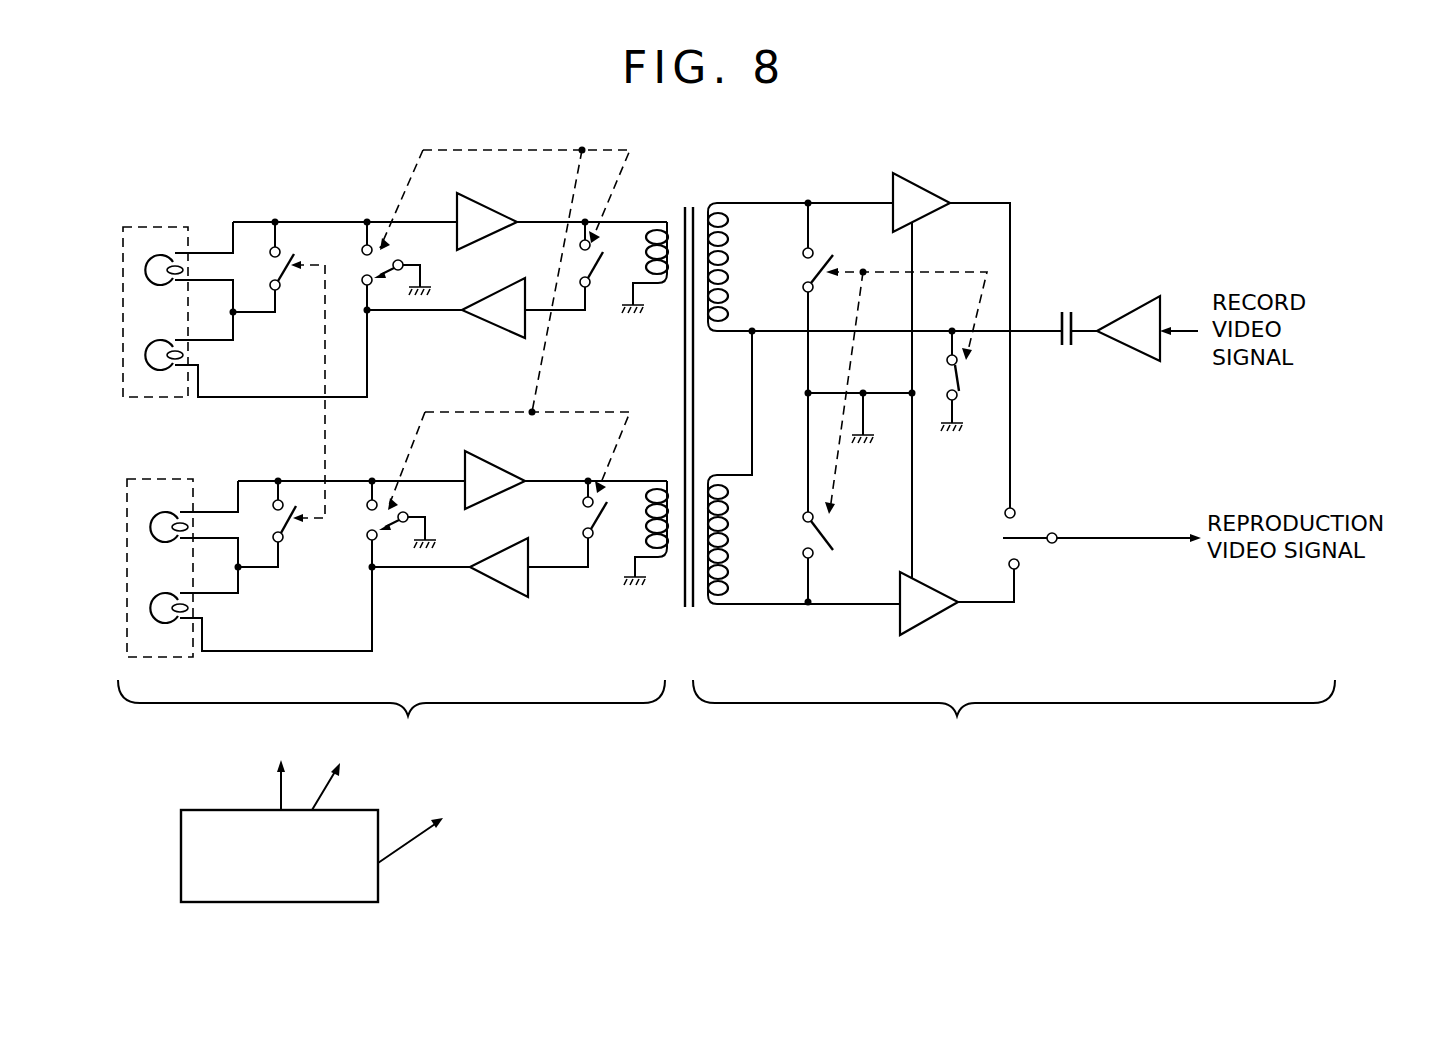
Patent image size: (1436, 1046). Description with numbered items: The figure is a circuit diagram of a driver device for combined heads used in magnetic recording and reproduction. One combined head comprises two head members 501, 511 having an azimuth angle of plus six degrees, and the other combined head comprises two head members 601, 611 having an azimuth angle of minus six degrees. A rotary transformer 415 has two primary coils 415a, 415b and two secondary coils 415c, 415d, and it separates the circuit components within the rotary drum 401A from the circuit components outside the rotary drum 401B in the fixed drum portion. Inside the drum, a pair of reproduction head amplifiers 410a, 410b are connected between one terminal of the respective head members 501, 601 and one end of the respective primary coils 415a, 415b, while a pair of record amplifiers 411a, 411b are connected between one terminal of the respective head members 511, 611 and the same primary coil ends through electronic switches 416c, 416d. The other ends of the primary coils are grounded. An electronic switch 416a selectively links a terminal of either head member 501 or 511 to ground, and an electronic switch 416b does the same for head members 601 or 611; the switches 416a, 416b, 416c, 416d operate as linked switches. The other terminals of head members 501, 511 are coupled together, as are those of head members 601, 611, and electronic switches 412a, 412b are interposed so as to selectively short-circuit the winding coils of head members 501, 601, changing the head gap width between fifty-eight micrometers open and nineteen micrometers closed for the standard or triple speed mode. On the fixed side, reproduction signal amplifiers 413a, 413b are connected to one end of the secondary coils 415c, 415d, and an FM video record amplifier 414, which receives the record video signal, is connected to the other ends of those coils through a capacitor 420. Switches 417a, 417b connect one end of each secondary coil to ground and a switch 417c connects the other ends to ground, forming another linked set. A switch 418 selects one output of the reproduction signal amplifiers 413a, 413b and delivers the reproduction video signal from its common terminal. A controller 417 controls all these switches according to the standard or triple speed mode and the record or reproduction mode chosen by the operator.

The head member 501 is at (147, 270).
The head member 511 is at (147, 355).
The head member 601 is at (152, 527).
The head member 611 is at (152, 608).
The electronic switch 412a is at (289, 280).
The electronic switch 412b is at (292, 518).
The electronic switch 416a is at (384, 258).
The electronic switch 416b is at (387, 516).
The electronic switch 416c is at (593, 285).
The electronic switch 416d is at (583, 509).
The reproduction head amplifier 410a is at (478, 218).
The reproduction head amplifier 410b is at (490, 477).
The record amplifier 411a is at (490, 314).
The record amplifier 411b is at (512, 576).
The rotary transformer 415 is at (690, 218).
The primary coil 415a is at (655, 222).
The primary coil 415b is at (655, 481).
The secondary coil 415c is at (728, 230).
The secondary coil 415d is at (722, 606).
The reproduction signal amplifier 413a is at (917, 202).
The reproduction signal amplifier 413b is at (928, 610).
The switch 417a is at (822, 258).
The switch 417b is at (828, 546).
The switch 417c is at (958, 385).
The controller 417 is at (242, 820).
The capacitor 420 is at (1064, 313).
The FM video record amplifier 414 is at (1128, 306).
The switch 418 is at (1022, 552).
The circuit components within the rotary drum 401A is at (391, 721).
The circuit components outside the rotary drum 401B is at (1014, 717).